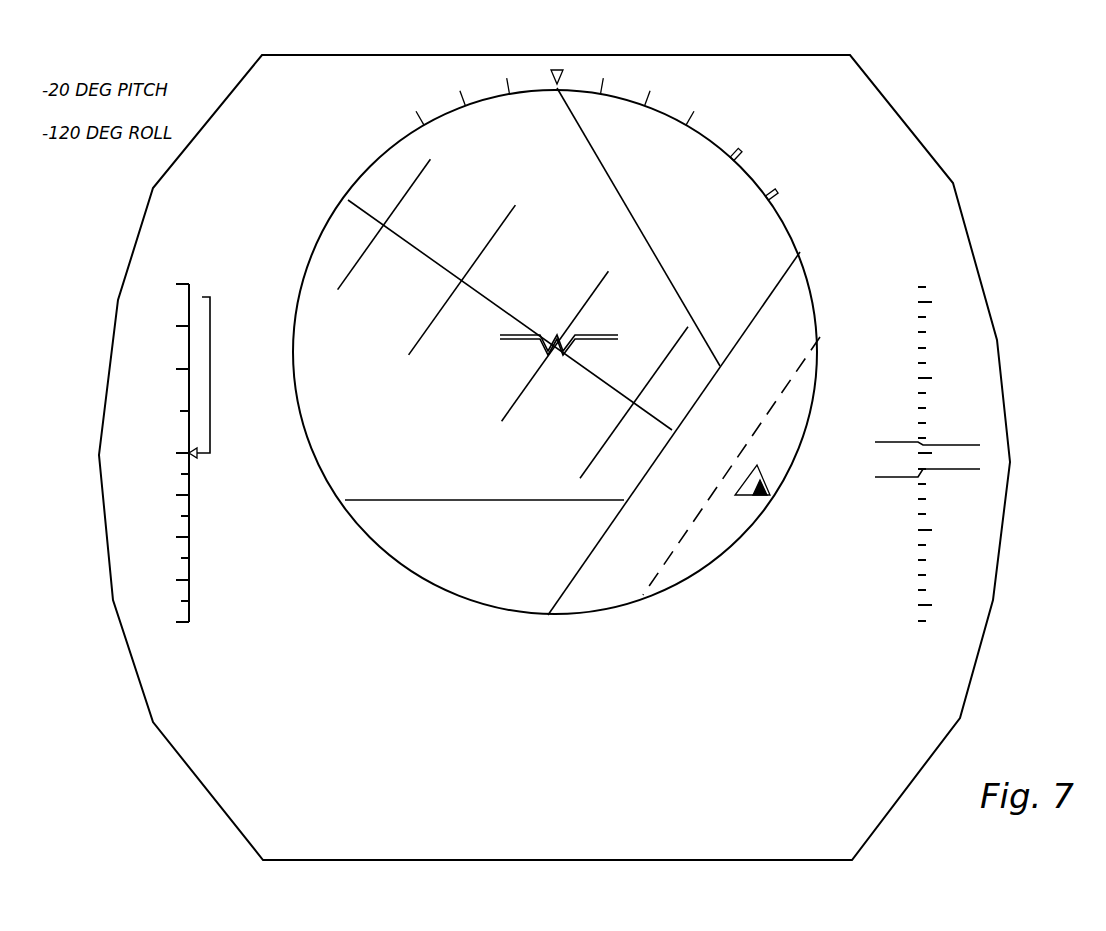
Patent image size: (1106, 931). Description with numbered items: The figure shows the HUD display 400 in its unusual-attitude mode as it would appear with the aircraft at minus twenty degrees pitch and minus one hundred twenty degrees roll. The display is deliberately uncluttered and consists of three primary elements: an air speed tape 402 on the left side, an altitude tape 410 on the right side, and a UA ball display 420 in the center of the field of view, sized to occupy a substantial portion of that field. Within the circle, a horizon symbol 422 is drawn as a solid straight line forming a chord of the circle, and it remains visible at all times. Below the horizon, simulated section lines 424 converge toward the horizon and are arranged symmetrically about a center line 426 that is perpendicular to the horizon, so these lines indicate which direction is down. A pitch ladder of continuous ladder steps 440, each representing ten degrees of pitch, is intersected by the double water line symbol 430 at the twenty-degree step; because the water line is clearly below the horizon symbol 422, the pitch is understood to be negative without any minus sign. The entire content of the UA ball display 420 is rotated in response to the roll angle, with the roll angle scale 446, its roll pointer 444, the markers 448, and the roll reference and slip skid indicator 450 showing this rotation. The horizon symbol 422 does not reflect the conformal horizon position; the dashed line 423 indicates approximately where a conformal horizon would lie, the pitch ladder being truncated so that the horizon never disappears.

The display 400 is at (537, 860).
The air speed tape 402 is at (185, 266).
The altitude tape 410 is at (892, 622).
The UA ball display 420 is at (438, 588).
The horizon symbol 422 is at (600, 538).
The dashed line 423 is at (803, 360).
The simulated section lines 424 is at (630, 208).
The center line 426 is at (462, 282).
The double water line symbol 430 is at (545, 352).
The ladder steps 440 is at (478, 265).
The roll pointer 444 is at (550, 88).
The roll angle scale 446 is at (672, 92).
The roll scale markers 448 is at (774, 188).
The roll reference and slip skid indicator 450 is at (765, 475).